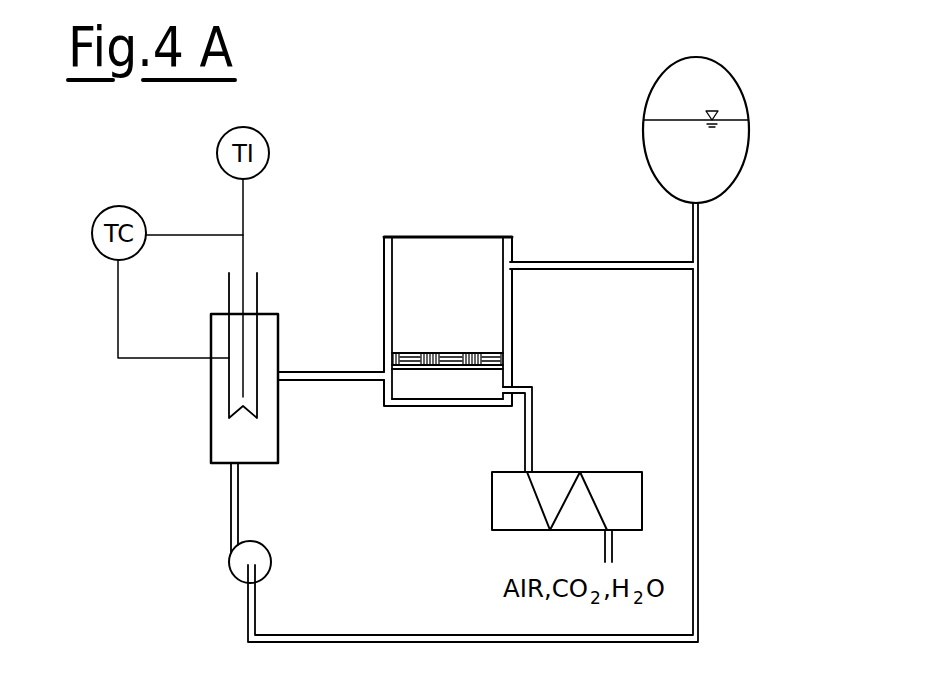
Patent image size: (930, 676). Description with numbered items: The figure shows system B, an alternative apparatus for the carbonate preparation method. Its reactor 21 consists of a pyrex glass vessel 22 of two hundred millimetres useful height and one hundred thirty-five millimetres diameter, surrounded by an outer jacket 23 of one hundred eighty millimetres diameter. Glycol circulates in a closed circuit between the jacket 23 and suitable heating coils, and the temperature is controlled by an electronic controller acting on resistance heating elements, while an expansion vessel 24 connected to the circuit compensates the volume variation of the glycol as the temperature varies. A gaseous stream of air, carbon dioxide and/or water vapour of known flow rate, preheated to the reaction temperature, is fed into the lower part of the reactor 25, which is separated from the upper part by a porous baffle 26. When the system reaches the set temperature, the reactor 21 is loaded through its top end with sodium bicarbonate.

The reactor 21 is at (450, 240).
The pyrex glass vessel 22 is at (413, 297).
The outer jacket 23 is at (505, 298).
The expansion vessel 24 is at (657, 78).
The lower part of the reactor 25 is at (437, 388).
The porous baffle 26 is at (488, 353).